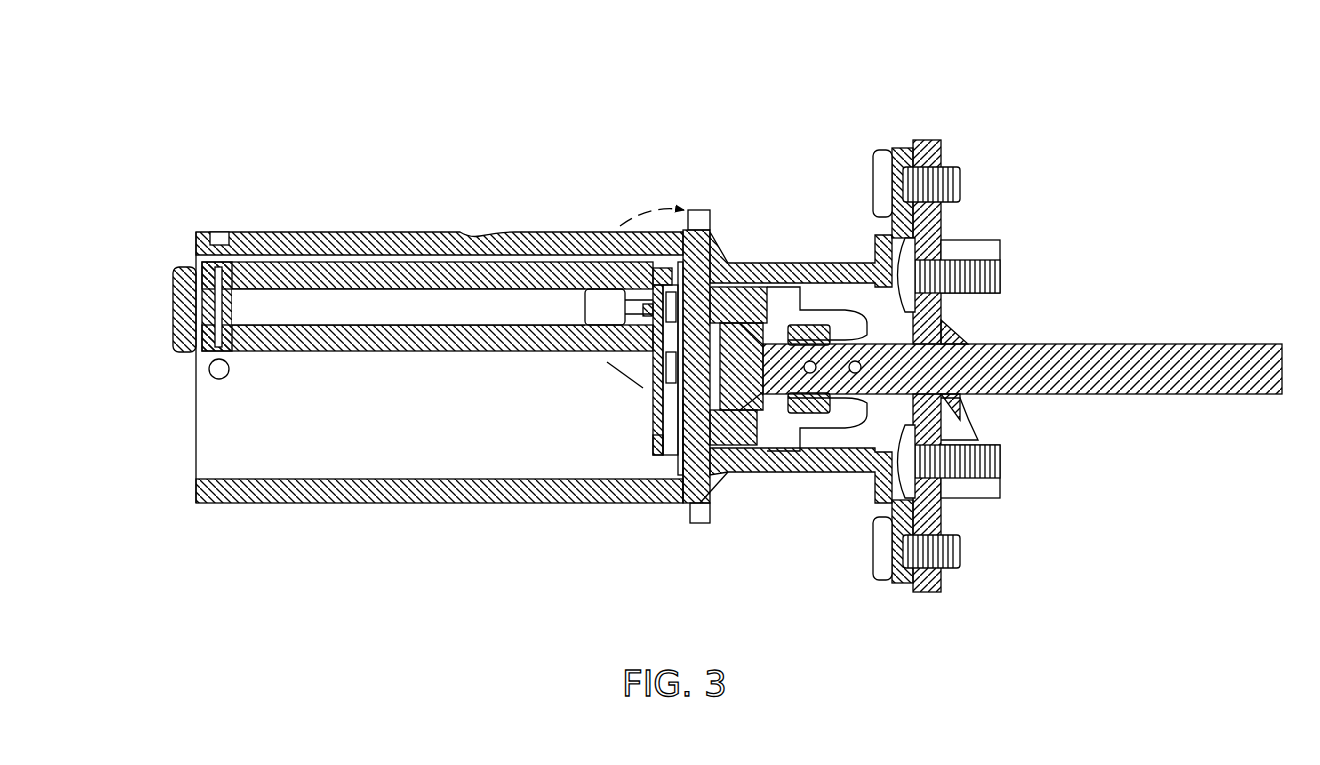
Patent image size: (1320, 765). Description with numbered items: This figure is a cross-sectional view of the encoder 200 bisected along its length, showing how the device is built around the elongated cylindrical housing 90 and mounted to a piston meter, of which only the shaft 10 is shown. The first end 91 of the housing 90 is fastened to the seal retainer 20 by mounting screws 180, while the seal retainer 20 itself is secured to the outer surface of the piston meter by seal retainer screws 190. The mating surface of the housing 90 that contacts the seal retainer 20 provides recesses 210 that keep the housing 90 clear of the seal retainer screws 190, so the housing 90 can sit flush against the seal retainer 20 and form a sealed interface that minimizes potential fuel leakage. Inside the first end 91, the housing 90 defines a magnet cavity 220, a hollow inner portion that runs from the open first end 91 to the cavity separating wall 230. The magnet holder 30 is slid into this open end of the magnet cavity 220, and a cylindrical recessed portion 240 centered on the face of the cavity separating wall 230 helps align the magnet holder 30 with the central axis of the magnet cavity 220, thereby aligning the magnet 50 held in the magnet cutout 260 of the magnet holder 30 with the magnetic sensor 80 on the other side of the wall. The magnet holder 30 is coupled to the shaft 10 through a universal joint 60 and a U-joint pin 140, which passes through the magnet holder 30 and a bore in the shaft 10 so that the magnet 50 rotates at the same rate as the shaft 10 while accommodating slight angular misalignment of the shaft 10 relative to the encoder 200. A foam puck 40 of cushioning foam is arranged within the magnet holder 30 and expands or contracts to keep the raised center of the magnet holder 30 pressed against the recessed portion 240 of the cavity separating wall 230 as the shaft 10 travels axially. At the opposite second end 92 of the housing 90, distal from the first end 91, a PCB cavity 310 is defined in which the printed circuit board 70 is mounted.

The shaft 10 is at (1140, 362).
The seal retainer 20 is at (928, 142).
The magnet holder 30 is at (776, 300).
The foam puck 40 is at (755, 450).
The magnet 50 is at (731, 473).
The universal-joint (U-joint) 60 is at (945, 336).
The printed circuit board (PCB) 70 is at (650, 418).
The magnetic sensor 80 is at (650, 372).
The housing 90 is at (312, 500).
The first end 91 is at (780, 263).
The second end 92 is at (196, 505).
The U-joint pin 140 is at (942, 414).
The mounting screws 180 is at (960, 186).
The seal retainer screws 190 is at (975, 262).
The encoder 200 is at (258, 168).
The recesses 210 is at (873, 487).
The magnet cavity 220 is at (853, 432).
The cavity separating wall 230 is at (690, 400).
The recessed portion 240 is at (683, 430).
The magnet cutout 260 is at (683, 236).
The PCB cavity 310 is at (390, 440).